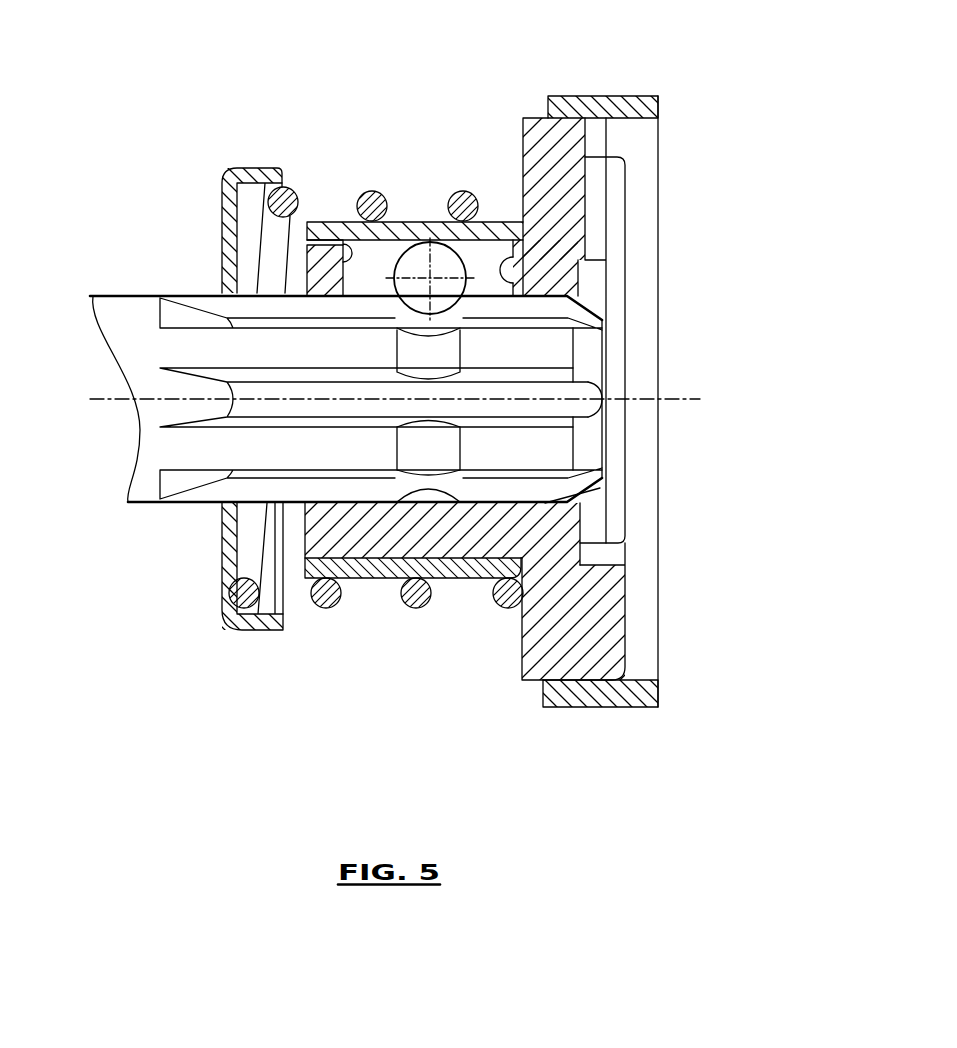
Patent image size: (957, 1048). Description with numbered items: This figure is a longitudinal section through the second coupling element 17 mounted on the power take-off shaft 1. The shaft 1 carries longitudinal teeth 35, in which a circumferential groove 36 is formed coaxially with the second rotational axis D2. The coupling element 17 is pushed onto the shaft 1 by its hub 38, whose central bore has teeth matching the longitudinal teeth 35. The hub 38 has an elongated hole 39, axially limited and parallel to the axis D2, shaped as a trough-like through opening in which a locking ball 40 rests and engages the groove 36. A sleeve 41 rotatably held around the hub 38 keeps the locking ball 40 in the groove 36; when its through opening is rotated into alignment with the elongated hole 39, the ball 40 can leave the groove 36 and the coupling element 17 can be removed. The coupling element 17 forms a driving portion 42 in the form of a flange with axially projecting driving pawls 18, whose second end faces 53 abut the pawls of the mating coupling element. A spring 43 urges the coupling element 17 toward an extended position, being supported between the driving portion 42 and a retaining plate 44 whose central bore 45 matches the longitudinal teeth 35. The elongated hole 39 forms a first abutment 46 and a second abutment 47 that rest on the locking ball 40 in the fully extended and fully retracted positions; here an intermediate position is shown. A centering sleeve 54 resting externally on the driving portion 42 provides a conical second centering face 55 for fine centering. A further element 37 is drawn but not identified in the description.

The power take-off shaft 1 is at (120, 312).
The second coupling element 17 is at (603, 587).
The driving pawls 18 is at (613, 630).
The longitudinal teeth 35 is at (548, 349).
The circumferential groove 36 is at (397, 450).
The bevel 37 is at (605, 492).
The hub 38 is at (495, 533).
The elongated hole 39 is at (369, 259).
The locking ball 40 is at (413, 257).
The sleeve 41 is at (493, 230).
The driving portion 42 is at (562, 655).
The spring 43 is at (416, 608).
The retaining plate 44 is at (259, 617).
The central bore 45 is at (183, 505).
The first abutment 46 is at (338, 234).
The second abutment 47 is at (507, 285).
The second end faces 53 is at (633, 662).
The centering sleeve 54 is at (586, 117).
The second centering face 55 is at (636, 115).
The second rotational axis D2 is at (382, 437).